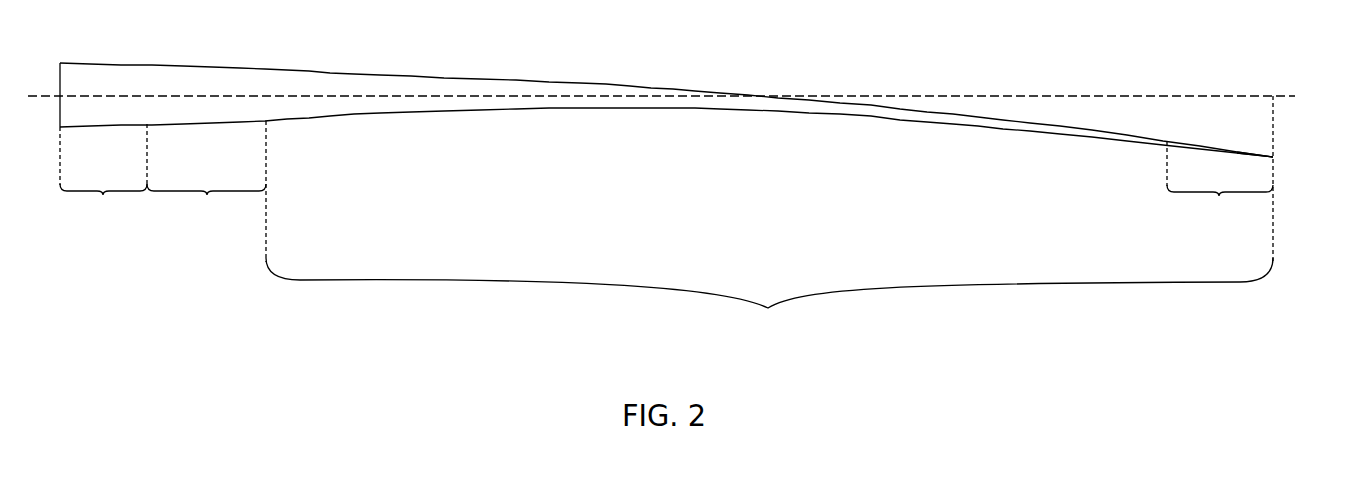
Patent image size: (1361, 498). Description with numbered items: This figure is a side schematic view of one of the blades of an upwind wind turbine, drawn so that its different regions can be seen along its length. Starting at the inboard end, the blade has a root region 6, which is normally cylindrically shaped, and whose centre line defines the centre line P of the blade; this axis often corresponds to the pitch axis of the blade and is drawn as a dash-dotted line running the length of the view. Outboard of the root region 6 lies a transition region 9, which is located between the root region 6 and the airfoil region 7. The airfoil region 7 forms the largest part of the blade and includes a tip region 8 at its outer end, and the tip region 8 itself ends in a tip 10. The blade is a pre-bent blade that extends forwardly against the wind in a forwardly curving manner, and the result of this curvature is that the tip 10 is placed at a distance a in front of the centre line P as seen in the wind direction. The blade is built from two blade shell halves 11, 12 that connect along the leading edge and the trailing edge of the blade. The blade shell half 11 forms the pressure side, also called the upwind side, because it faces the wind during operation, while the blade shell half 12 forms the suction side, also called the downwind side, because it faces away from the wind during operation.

The root region 6 is at (103, 195).
The airfoil region 7 is at (768, 308).
The tip region 8 is at (1219, 196).
The transition region 9 is at (207, 195).
The tip 10 is at (1272, 158).
The blade shell half 11 is at (302, 108).
The blade shell half 12 is at (267, 85).
The centre line p is at (1230, 94).
The distance a is at (1278, 130).